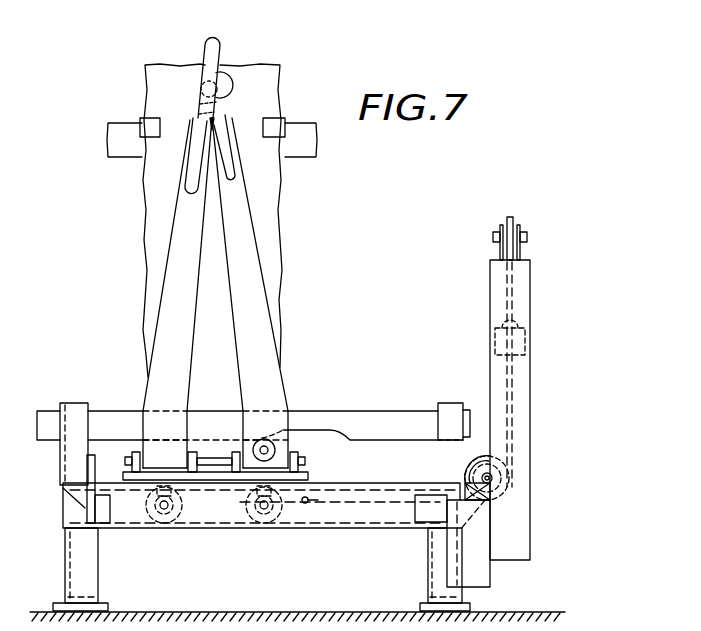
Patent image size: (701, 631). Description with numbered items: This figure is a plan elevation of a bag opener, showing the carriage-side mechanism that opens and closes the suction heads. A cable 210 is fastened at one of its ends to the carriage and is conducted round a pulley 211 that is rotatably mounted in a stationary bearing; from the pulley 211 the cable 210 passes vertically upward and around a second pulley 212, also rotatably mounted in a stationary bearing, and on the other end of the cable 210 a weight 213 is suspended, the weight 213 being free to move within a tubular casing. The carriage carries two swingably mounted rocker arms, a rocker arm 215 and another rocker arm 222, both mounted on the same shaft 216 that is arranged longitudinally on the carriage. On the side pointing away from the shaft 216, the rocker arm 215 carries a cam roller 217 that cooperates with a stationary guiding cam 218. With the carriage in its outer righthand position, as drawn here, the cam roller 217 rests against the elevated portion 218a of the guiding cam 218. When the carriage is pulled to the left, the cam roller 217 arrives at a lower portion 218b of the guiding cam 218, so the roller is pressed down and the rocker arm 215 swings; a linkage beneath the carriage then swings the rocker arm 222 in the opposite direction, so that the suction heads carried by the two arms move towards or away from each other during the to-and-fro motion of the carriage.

The cable 210 is at (375, 498).
The pulley 211 is at (487, 478).
The pulley 212 is at (510, 215).
The weight 213 is at (522, 340).
The rocker arm 215 is at (247, 205).
The shaft 216 is at (240, 293).
The cam roller 217 is at (263, 443).
The guiding cam 218 is at (253, 378).
The elevated portion of the guiding cam 218a is at (305, 430).
The lower portion of the guiding cam 218b is at (202, 460).
The rocker arm 222 is at (180, 205).